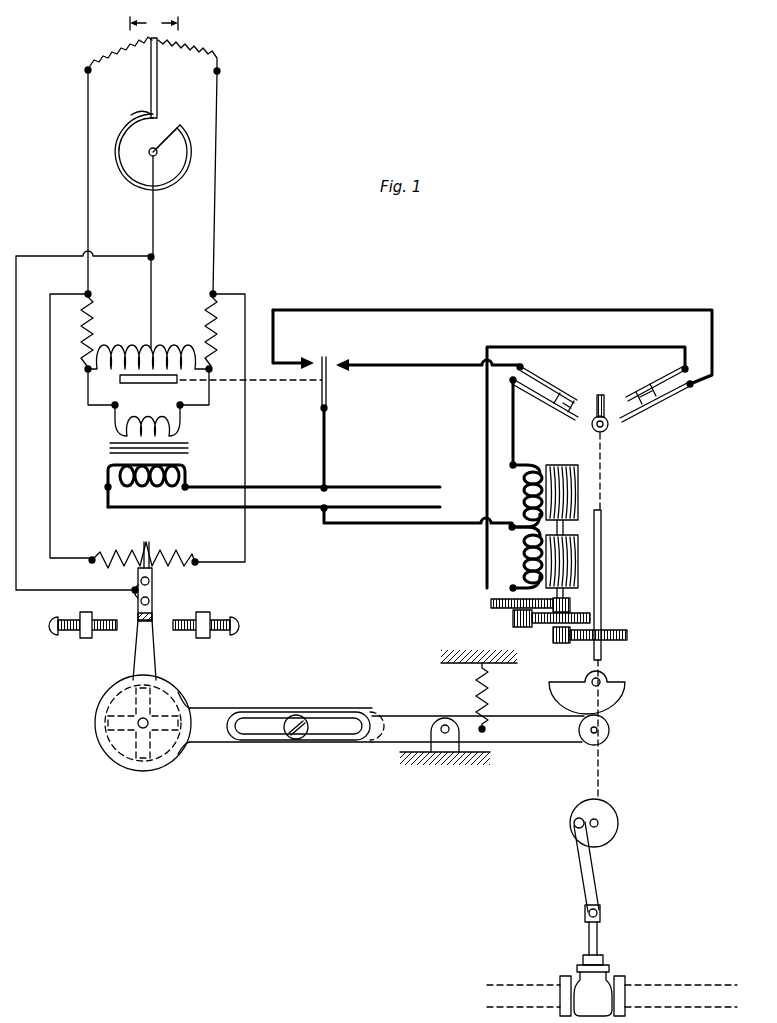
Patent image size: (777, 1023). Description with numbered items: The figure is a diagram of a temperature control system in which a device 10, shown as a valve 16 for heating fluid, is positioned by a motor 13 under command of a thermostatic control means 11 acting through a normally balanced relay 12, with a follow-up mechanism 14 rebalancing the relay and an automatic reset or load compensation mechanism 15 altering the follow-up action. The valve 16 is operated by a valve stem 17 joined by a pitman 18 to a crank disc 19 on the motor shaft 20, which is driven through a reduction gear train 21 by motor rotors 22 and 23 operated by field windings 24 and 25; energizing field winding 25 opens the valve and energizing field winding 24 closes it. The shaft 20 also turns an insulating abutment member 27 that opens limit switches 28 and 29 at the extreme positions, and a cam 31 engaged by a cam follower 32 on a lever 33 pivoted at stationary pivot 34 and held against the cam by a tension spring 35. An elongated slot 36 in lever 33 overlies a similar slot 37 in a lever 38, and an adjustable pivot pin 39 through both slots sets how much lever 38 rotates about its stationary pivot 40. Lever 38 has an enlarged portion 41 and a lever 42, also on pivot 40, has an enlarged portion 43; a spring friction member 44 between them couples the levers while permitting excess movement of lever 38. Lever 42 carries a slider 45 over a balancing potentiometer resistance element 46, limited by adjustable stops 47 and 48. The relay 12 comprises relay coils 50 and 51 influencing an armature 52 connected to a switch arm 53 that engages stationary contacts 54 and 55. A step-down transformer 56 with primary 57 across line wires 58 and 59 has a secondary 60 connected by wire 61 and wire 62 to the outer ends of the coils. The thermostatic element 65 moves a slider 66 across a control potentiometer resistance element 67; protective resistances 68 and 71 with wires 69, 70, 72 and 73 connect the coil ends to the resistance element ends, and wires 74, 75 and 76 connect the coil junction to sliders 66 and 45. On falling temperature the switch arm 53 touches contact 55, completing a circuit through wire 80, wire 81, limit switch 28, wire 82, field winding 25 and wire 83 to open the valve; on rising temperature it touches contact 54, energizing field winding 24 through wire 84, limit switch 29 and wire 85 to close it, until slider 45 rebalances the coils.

The device to be positioned 10 is at (617, 964).
The control means 11 is at (240, 114).
The normally balanced relay 12 is at (262, 288).
The motor 13 is at (622, 530).
The follow-up mechanism 14 is at (178, 574).
The automatic reset or load compensation mechanism 15 is at (86, 752).
The valve 16 is at (578, 978).
The valve stem 17 is at (588, 931).
The pitman 18 is at (590, 880).
The crank disc 19 is at (606, 820).
The shaft 20 is at (602, 604).
The reduction gear train 21 is at (552, 641).
The motor rotor 22 is at (565, 572).
The motor rotor 23 is at (565, 468).
The field winding 24 is at (522, 564).
The field winding 25 is at (526, 492).
The abutment member 27 is at (602, 394).
The limit switch 28 is at (566, 406).
The limit switch 29 is at (636, 416).
The cam 31 is at (616, 692).
The cam follower 32 is at (610, 730).
The lever 33 is at (530, 744).
The stationary pivot 34 is at (443, 724).
The tension spring 35 is at (490, 686).
The elongated slot 36 is at (332, 722).
The elongated slot 37 is at (260, 730).
The lever 38 is at (206, 716).
The pivot pin 39 is at (296, 740).
The stationary pivot 40 is at (150, 730).
The enlarged portion 41 is at (174, 690).
The lever 42 is at (136, 656).
The enlarged portion 43 is at (106, 698).
The spring friction member 44 is at (130, 760).
The slider 45 is at (138, 562).
The balancing potentiometer resistance element 46 is at (150, 546).
The adjustable stop 47 is at (100, 620).
The adjustable stop 48 is at (182, 620).
The relay coil 50 is at (118, 348).
The relay coil 51 is at (162, 348).
The armature 52 is at (150, 384).
The switch arm 53 is at (327, 388).
The stationary contact 54 is at (308, 358).
The stationary contact 55 is at (342, 358).
The step-down transformer 56 is at (98, 456).
The primary 57 is at (148, 484).
The line wire 58 is at (282, 486).
The line wire 59 is at (290, 510).
The secondary 60 is at (152, 418).
The wire 61 is at (88, 408).
The wire 62 is at (209, 400).
The thermostatic element 65 is at (126, 182).
The slider 66 is at (158, 74).
The control potentiometer resistance element 67 is at (117, 52).
The protective resistance 68 is at (88, 312).
The wire 69 is at (86, 190).
The wire 70 is at (50, 526).
The protective resistance 71 is at (210, 316).
The wire 72 is at (216, 220).
The wire 73 is at (246, 438).
The wire 74 is at (152, 292).
The wire 75 is at (153, 226).
The wire 76 is at (17, 584).
The wire 80 is at (326, 452).
The wire 81 is at (430, 363).
The wire 82 is at (517, 444).
The wire 83 is at (402, 524).
The wire 84 is at (472, 309).
The wire 85 is at (582, 346).